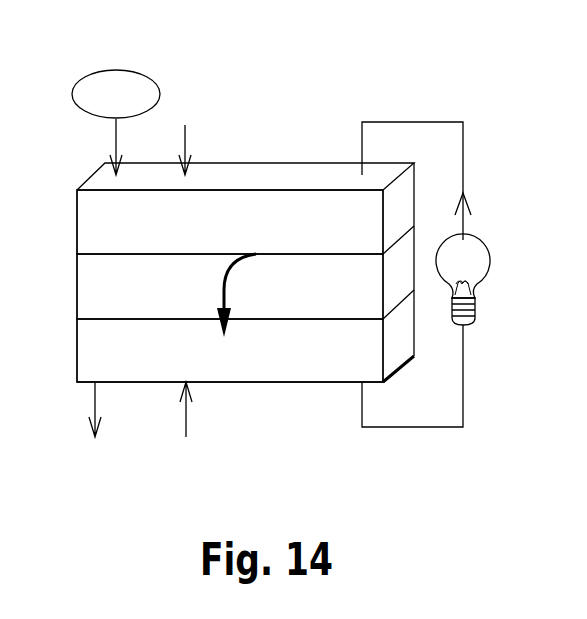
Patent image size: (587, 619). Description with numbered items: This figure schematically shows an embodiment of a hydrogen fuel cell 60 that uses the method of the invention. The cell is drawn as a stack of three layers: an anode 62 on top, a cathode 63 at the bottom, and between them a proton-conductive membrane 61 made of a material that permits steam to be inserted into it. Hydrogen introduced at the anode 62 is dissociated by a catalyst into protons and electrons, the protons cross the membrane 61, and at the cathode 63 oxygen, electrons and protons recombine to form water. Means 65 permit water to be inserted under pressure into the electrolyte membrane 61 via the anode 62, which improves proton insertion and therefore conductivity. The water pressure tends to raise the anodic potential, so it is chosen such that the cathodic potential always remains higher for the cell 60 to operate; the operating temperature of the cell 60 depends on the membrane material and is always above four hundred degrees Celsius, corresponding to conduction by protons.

The hydrogen fuel cell 60 is at (222, 128).
The proton-conductive membrane 61 is at (245, 295).
The anode 62 is at (245, 222).
The cathode 63 is at (230, 350).
The means permitting the insertion under pressure of water 65 is at (118, 62).